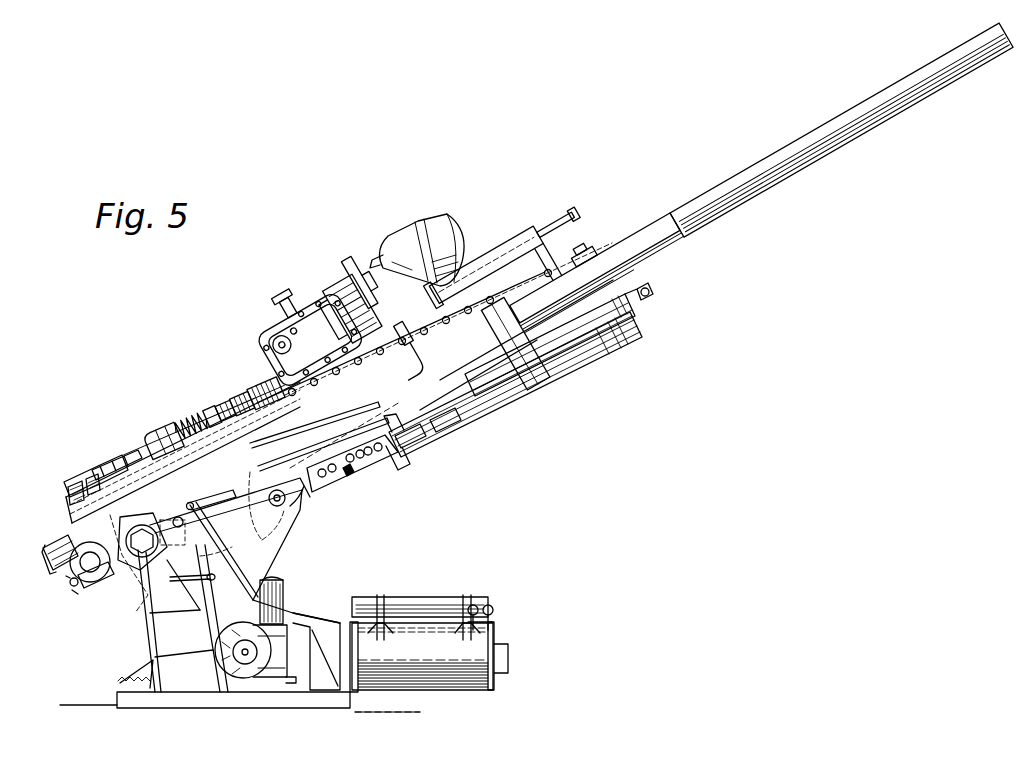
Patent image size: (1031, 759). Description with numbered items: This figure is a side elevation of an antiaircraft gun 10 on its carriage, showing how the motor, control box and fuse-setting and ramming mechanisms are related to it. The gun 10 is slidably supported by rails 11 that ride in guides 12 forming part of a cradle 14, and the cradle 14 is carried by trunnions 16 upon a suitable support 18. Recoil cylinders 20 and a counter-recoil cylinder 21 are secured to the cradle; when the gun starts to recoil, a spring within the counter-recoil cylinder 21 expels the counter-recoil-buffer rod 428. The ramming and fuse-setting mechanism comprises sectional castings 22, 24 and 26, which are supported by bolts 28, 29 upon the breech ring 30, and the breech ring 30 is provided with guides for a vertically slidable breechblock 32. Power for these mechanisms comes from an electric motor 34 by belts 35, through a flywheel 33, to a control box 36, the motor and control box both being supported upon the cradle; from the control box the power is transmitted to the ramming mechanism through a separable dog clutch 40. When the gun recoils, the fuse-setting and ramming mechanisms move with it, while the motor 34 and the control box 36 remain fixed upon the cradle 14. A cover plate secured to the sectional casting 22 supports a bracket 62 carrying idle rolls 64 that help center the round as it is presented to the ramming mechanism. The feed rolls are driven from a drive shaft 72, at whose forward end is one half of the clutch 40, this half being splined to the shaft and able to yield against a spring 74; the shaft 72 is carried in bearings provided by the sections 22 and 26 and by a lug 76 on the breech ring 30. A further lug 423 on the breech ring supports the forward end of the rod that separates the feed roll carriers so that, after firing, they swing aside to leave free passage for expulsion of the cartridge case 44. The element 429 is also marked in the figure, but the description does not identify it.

The antiaircraft gun 10 is at (676, 209).
The rails 11 is at (636, 238).
The guides 12 is at (570, 336).
The cradle 14 is at (265, 552).
The trunnions 16 is at (190, 573).
The support 18 is at (150, 632).
The recoil cylinders 20 is at (490, 404).
The counter-recoil cylinder 21 is at (485, 262).
The sectional casting 22 is at (86, 512).
The sectional casting 24 is at (126, 469).
The sectional casting 26 is at (150, 432).
The bolt 28 is at (116, 518).
The bolt 29 is at (222, 546).
The breech ring 30 is at (272, 532).
The breechblock 32 is at (288, 521).
The flywheel 33 is at (346, 290).
The electric motor 34 is at (433, 214).
The belts 35 is at (360, 264).
The control box 36 is at (267, 332).
The separable dog clutch 40 is at (251, 373).
The cartridge case 44 is at (54, 552).
The bracket 62 is at (72, 583).
The idle rolls 64 is at (81, 586).
The drive shaft 72 is at (191, 419).
The spring 74 is at (236, 393).
The lug 76 is at (222, 403).
The lug 423 is at (268, 402).
The counter-recoil-buffer rod 428 is at (396, 323).
The linkage 429 is at (418, 346).